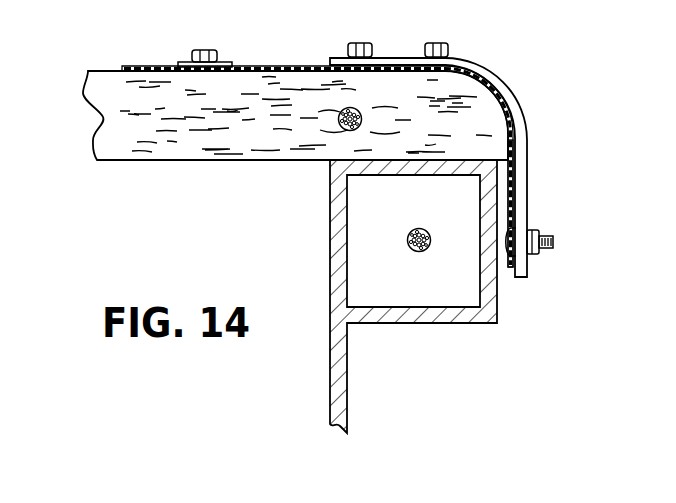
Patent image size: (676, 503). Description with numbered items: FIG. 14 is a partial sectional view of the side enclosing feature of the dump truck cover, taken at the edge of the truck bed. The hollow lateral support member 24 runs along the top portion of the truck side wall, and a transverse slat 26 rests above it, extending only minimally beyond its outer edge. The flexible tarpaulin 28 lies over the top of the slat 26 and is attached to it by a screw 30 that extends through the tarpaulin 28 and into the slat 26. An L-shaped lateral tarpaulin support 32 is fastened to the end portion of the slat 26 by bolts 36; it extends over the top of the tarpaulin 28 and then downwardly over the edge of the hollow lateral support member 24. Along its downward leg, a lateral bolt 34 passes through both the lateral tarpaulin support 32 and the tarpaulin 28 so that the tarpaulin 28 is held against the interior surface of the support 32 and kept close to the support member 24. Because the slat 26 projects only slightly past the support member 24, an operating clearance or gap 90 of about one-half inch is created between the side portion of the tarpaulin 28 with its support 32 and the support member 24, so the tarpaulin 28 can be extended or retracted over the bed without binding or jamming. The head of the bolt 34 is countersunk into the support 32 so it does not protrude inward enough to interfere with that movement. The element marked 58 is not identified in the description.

The hollow lateral support member 24 is at (330, 246).
The slat 26 is at (97, 115).
The flexible tarpaulin 28 is at (258, 66).
The screw 30 is at (206, 49).
The L-shaped lateral tarpaulin support 32 is at (528, 178).
The lateral bolt 34 is at (544, 231).
The bolt 36 is at (439, 44).
The electrical conductor 58 is at (343, 110).
The gap 90 is at (502, 202).